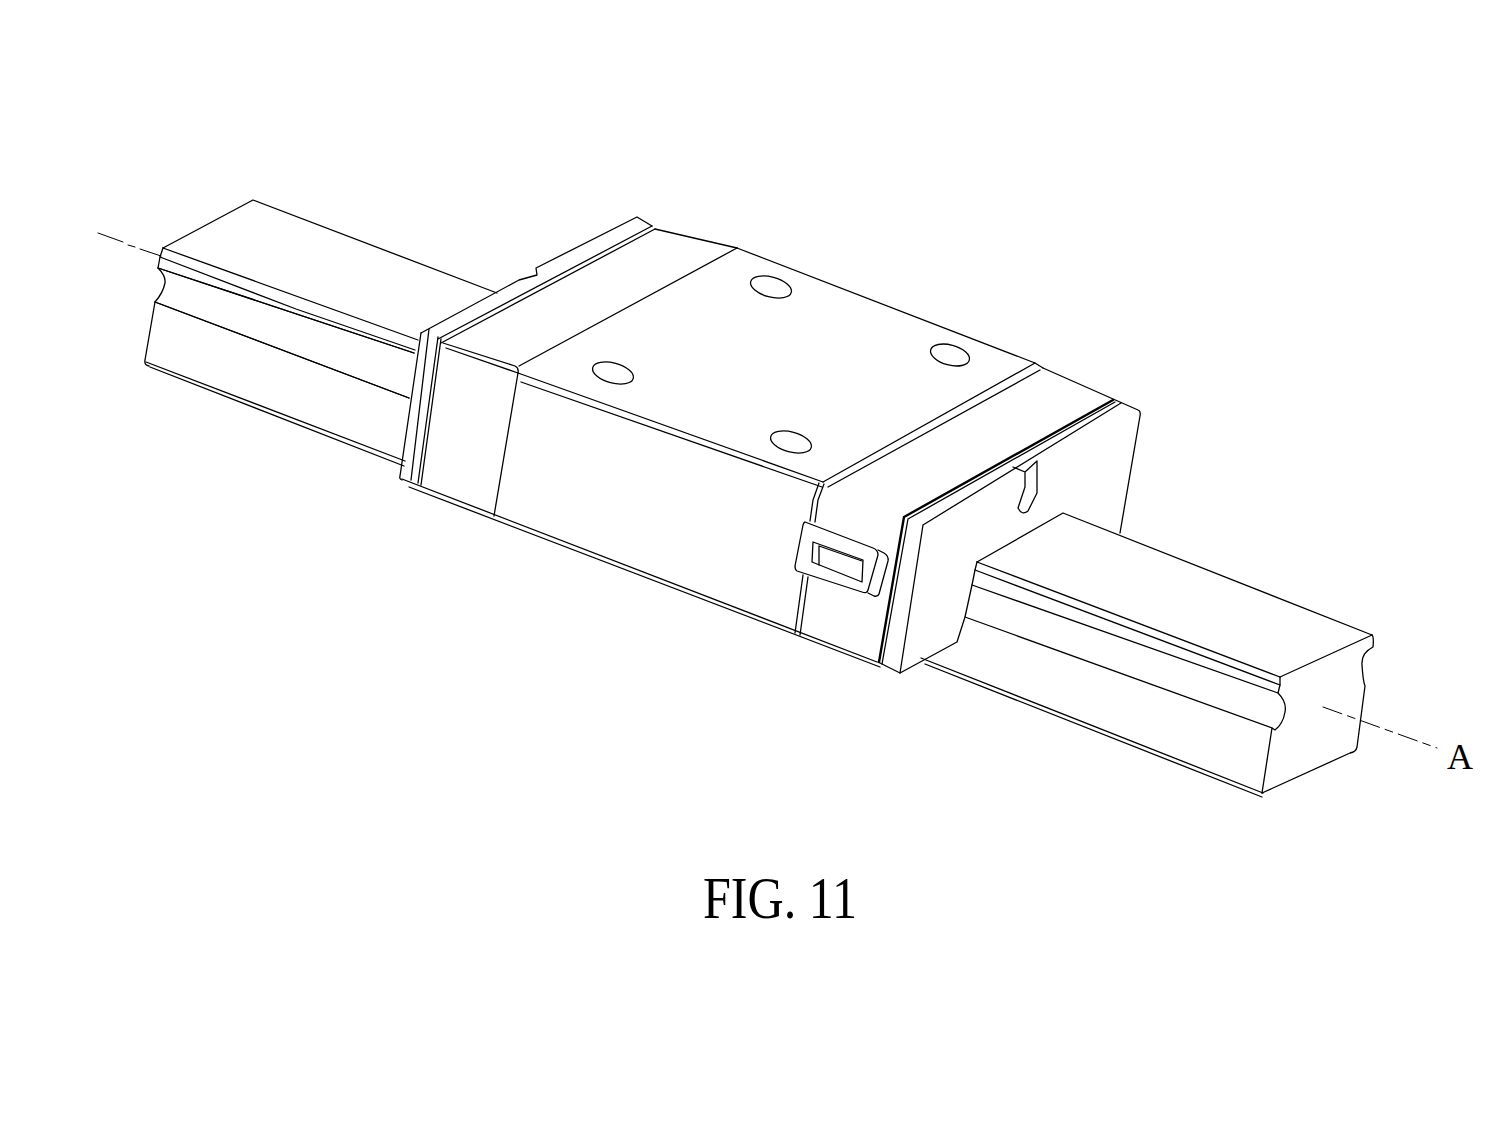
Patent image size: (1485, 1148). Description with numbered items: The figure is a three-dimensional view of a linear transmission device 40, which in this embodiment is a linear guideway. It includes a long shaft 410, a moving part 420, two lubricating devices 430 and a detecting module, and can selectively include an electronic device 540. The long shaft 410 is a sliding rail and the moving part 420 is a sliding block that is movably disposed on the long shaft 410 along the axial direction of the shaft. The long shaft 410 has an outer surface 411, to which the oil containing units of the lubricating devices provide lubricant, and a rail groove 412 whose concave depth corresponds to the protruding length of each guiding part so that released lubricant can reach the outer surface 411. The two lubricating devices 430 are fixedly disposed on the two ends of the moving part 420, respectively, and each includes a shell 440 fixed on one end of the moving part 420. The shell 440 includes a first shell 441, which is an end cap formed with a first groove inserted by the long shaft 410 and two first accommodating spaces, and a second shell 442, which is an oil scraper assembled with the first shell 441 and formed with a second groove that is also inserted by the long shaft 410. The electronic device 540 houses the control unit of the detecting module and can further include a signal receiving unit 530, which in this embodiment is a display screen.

The linear transmission device 40 is at (337, 113).
The long shaft 410 is at (355, 262).
The outer surface 411 is at (273, 332).
The rail groove 412 is at (361, 386).
The moving part 420 is at (865, 328).
The lubricating device 430 is at (672, 255).
The shell 440 is at (1243, 367).
The first shell 441 is at (1082, 400).
The second shell 442 is at (1118, 447).
The signal receiving unit 530 is at (833, 560).
The electronic device 540 is at (867, 588).